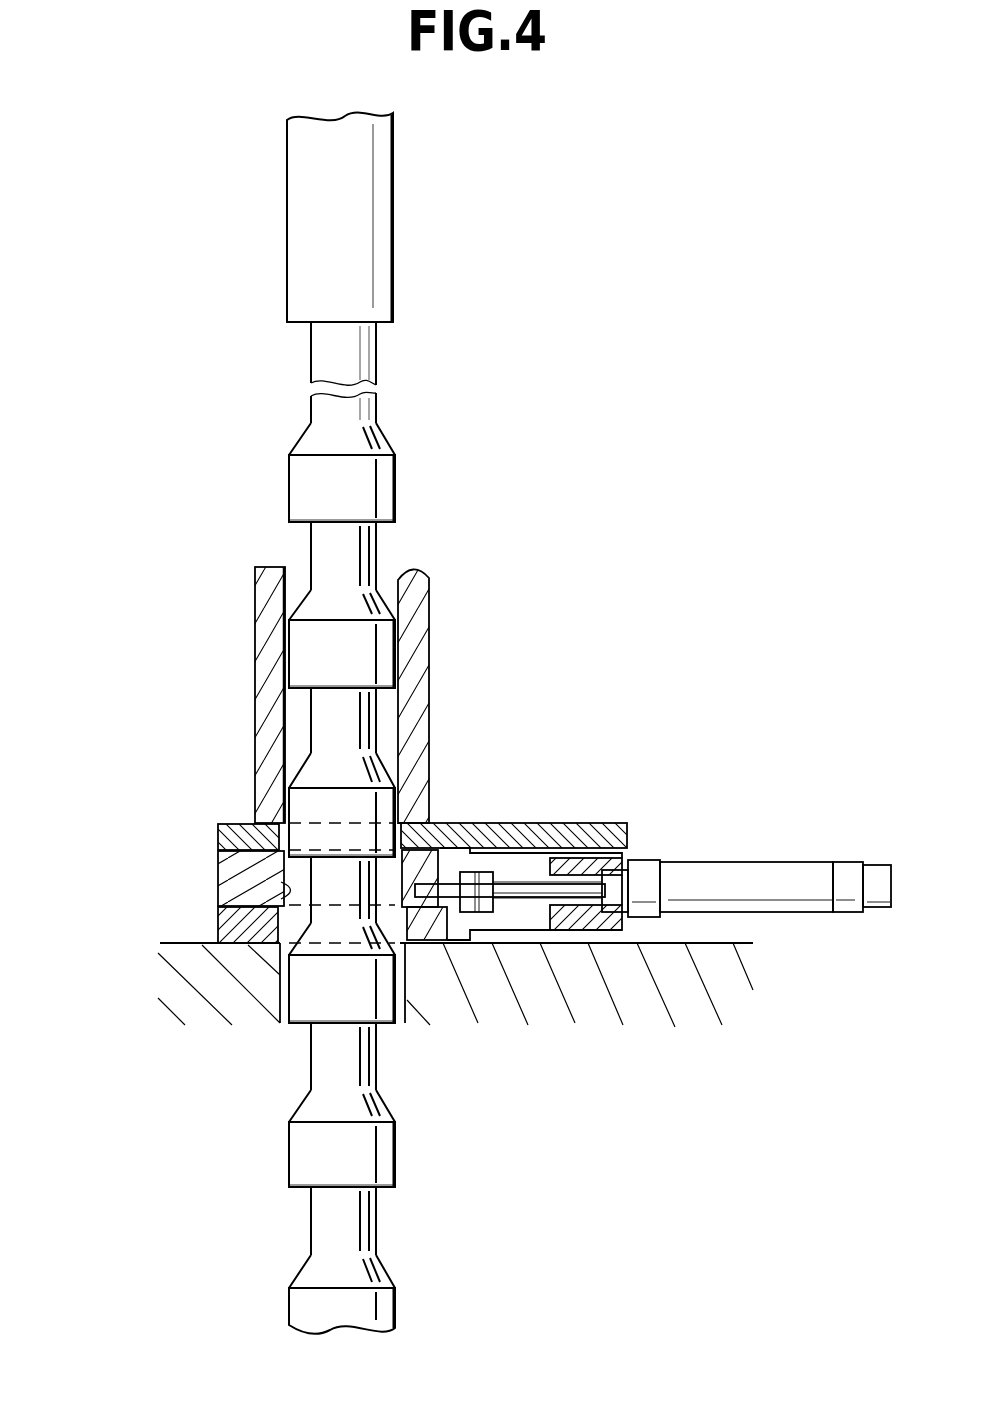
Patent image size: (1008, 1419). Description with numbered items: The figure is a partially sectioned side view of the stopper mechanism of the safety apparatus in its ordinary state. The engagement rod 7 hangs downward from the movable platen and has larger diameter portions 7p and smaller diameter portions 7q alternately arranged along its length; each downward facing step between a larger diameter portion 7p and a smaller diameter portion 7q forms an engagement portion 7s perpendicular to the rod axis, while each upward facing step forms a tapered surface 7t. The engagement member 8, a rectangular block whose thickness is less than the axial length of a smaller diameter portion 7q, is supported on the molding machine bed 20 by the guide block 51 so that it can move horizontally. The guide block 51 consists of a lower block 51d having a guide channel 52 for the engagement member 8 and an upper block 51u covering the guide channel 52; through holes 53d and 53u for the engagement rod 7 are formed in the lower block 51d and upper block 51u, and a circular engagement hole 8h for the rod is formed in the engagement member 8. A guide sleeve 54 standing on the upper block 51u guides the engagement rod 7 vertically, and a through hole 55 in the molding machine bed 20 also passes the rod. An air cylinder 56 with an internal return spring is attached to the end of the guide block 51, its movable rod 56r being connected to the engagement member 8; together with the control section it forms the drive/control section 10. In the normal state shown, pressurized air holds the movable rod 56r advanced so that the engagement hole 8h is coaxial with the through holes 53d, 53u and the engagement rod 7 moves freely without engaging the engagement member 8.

The engagement rod 7 is at (402, 290).
The tapered surface 7t is at (385, 440).
The larger diameter portion 7p is at (287, 482).
The engagement portion 7s is at (400, 522).
The smaller diameter portion 7q is at (377, 550).
The guide sleeve 54 is at (255, 697).
The guide block 51 is at (390, 905).
The upper block 51u is at (218, 838).
The lower block 51d is at (233, 943).
The guide channel 52 is at (220, 900).
The engagement hole 8h is at (281, 884).
The engagement member 8 is at (446, 882).
The through hole 53u is at (422, 850).
The through hole 53d is at (407, 948).
The through hole 55 is at (407, 1000).
The air cylinder 56 is at (812, 912).
The movable rod 56r is at (527, 900).
The drive/control section 10 is at (712, 838).
The molding machine bed 20 is at (727, 942).